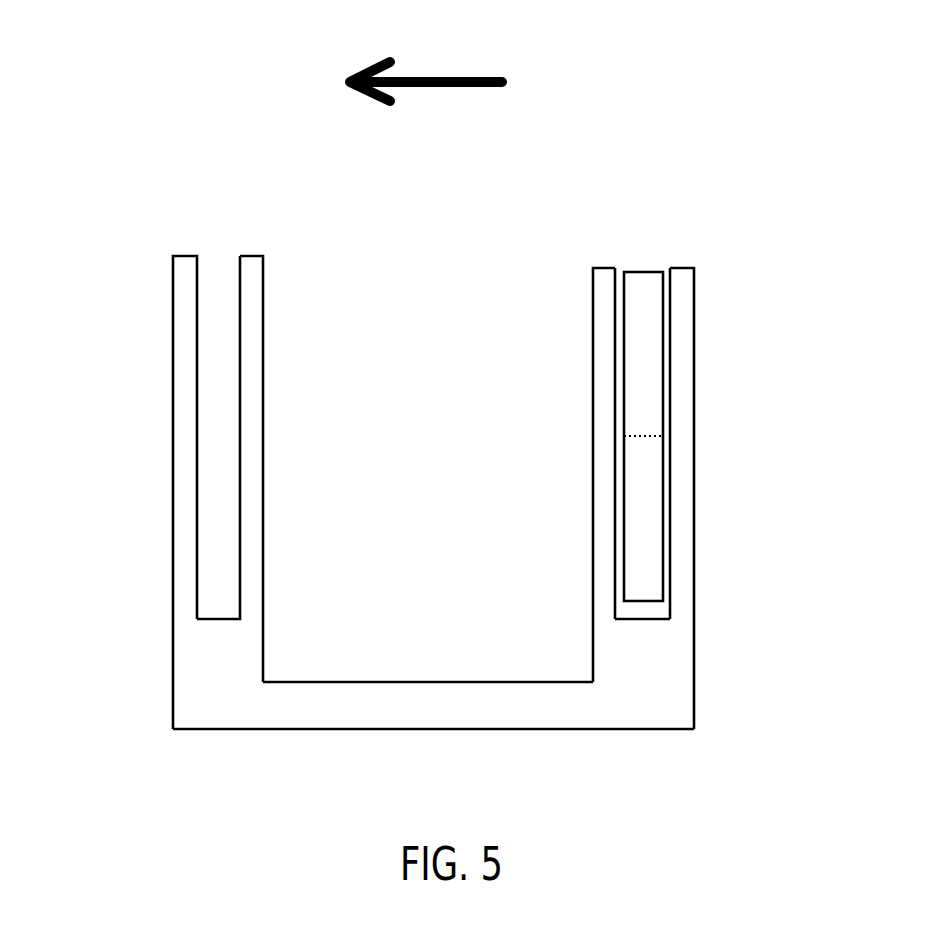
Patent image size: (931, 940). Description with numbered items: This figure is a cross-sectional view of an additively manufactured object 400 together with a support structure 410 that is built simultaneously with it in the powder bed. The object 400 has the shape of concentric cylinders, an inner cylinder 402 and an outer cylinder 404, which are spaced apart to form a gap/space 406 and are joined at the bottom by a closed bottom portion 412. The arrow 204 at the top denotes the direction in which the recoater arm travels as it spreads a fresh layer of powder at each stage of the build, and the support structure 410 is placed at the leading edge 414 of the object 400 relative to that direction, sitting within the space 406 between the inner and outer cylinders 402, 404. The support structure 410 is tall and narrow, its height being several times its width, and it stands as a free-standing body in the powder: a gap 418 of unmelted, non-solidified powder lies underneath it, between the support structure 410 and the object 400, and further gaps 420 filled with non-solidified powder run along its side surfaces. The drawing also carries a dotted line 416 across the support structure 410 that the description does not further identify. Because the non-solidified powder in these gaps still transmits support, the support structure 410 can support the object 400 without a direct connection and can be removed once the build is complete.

The arrow 204 is at (468, 77).
The object 400 is at (174, 256).
The inner cylinder 402 is at (263, 377).
The outer cylinder 404 is at (176, 390).
The gap/space 406 is at (232, 557).
The support structure 410 is at (648, 256).
The closed bottom portion 412 is at (409, 705).
The leading edge 414 is at (613, 527).
The reference line 416 is at (639, 442).
The gap 418 is at (647, 609).
The gaps 420 is at (663, 403).